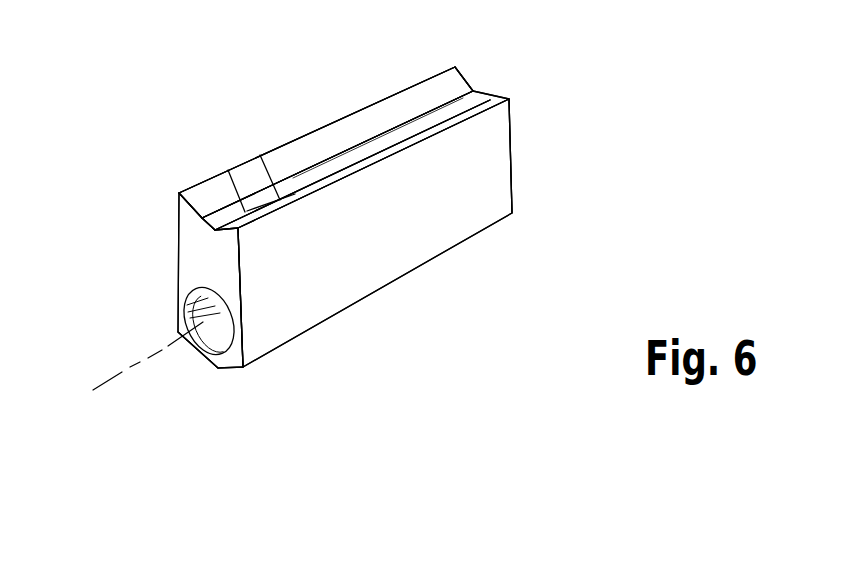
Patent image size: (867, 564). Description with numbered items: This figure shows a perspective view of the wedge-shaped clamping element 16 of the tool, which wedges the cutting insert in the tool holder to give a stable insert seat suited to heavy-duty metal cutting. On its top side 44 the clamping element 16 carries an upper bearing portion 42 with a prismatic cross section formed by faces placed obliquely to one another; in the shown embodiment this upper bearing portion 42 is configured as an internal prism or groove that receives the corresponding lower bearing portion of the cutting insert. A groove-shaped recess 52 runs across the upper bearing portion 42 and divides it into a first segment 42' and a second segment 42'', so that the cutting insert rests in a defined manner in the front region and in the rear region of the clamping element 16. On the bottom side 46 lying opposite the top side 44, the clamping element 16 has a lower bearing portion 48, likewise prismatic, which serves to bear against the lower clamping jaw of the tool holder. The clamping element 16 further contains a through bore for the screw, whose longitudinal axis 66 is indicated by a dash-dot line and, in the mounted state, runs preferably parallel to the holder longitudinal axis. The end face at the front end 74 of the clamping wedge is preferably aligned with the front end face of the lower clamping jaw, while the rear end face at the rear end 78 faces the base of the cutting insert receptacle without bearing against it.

The clamping element 16 is at (134, 177).
The upper bearing portion 42 is at (344, 131).
The first segment 42' is at (318, 142).
The second segment 42'' is at (346, 141).
The top side 44 is at (424, 100).
The bottom side 46 is at (390, 283).
The lower bearing portion 48 is at (207, 369).
The groove-shaped recess 52 is at (250, 178).
The longitudinal axis 66 is at (120, 372).
The front end 74 is at (188, 253).
The rear end 78 is at (514, 152).